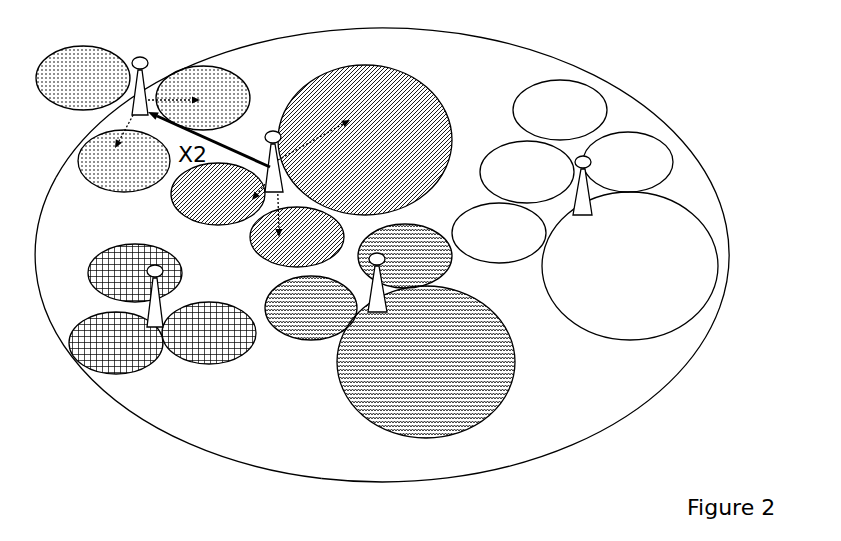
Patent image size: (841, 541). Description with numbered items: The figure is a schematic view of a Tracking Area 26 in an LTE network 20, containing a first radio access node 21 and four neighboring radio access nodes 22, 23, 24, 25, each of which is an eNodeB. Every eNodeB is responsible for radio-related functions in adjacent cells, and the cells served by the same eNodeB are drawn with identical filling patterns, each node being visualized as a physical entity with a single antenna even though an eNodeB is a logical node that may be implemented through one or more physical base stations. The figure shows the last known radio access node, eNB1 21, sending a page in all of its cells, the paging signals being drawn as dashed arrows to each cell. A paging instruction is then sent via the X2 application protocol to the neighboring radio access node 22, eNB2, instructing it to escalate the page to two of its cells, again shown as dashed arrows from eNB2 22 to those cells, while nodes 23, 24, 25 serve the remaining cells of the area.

The mobile communication network 20 is at (592, 55).
The first radio access node 21 is at (268, 130).
The neighboring radio access node 22 is at (148, 58).
The neighboring radio access node 23 is at (150, 304).
The neighboring radio access node 24 is at (365, 306).
The neighboring radio access node 25 is at (588, 158).
The tracking area TA1 26 is at (213, 426).